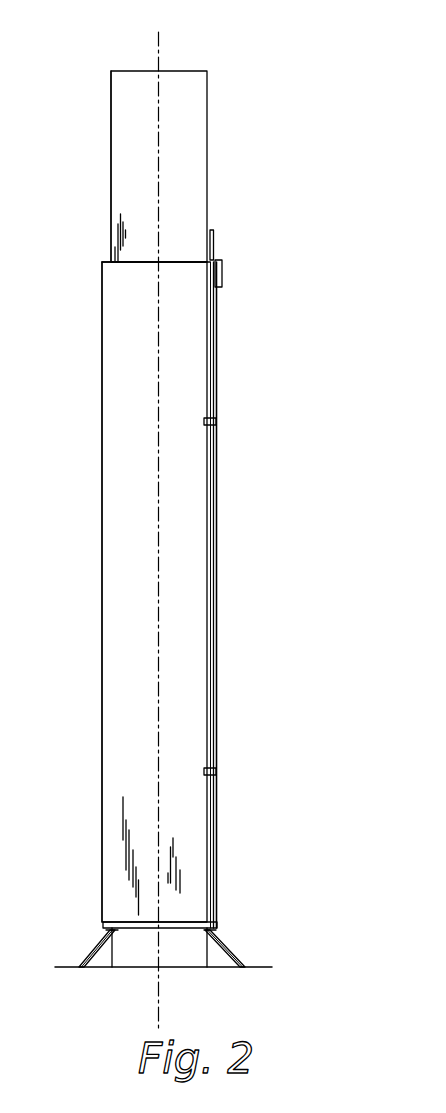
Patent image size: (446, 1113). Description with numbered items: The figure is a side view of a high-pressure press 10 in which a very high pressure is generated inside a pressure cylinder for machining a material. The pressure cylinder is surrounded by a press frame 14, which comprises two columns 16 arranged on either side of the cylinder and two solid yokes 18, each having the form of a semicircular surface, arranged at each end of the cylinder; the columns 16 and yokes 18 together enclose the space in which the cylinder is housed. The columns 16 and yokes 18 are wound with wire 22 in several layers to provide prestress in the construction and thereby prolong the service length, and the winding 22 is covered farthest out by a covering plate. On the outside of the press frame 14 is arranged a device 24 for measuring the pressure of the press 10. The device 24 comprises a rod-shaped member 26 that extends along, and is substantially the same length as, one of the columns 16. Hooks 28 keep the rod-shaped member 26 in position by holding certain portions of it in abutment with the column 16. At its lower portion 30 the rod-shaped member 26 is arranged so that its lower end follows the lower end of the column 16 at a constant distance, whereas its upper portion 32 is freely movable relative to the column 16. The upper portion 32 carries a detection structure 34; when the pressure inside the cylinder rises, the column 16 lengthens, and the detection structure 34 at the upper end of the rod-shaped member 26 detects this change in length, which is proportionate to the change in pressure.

The high-pressure press 10 is at (214, 69).
The press frame 14 is at (107, 292).
The column 16 is at (210, 599).
The yoke 18 is at (207, 132).
The wire 22 is at (125, 135).
The device for measuring pressure 24 is at (216, 513).
The rod-shaped member 26 is at (214, 460).
The hook 28 is at (216, 772).
The lower portion 30 is at (212, 932).
The upper portion 32 is at (222, 268).
The detection structure 34 is at (214, 252).